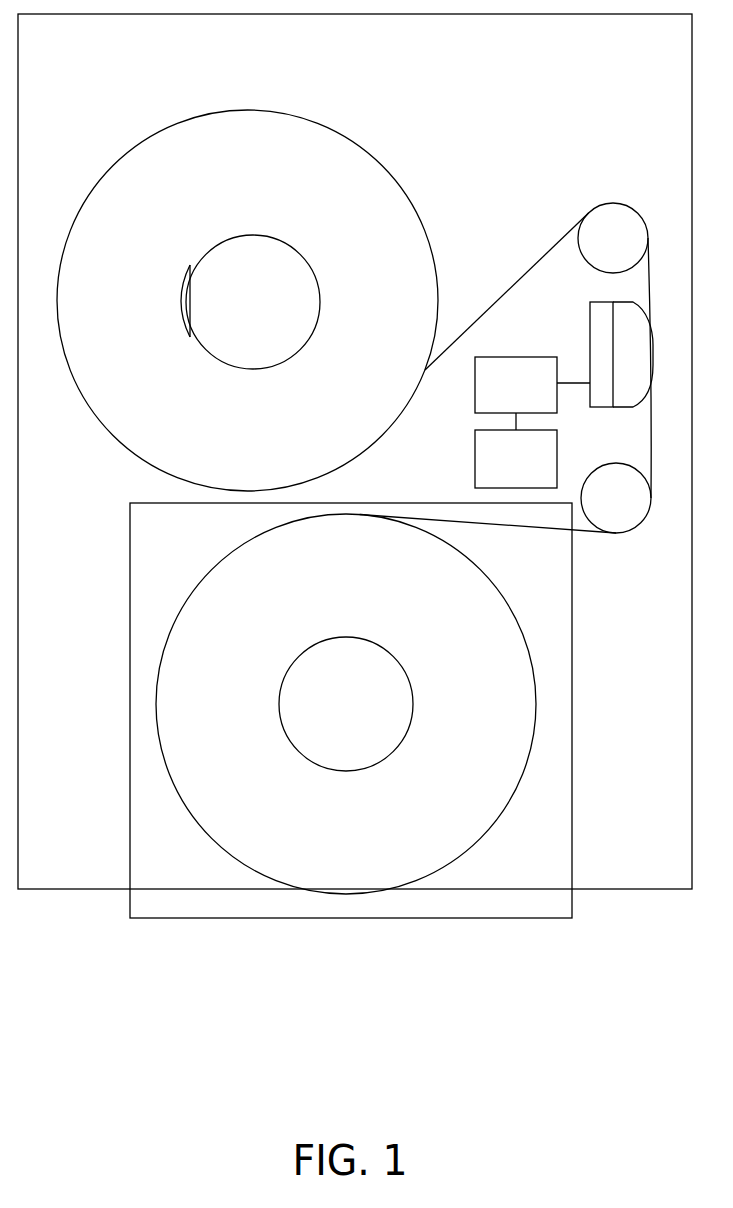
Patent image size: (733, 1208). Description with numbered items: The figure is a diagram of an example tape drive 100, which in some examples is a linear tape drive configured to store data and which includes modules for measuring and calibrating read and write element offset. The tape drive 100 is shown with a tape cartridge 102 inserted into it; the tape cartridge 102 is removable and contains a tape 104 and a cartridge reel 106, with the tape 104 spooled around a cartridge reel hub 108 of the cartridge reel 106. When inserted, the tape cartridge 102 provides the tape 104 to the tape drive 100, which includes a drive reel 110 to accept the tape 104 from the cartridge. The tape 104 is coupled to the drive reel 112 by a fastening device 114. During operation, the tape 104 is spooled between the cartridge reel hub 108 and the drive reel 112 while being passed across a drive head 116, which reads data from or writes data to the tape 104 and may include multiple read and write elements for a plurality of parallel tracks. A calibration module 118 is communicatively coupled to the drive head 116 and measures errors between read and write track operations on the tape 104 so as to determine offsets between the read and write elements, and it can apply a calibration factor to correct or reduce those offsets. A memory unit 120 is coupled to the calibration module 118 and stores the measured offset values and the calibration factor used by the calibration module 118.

The tape drive 100 is at (365, 1121).
The tape cartridge 102 is at (572, 765).
The tape 104 is at (530, 270).
The cartridge reel 106 is at (488, 576).
The cartridge reel hub 108 is at (412, 690).
The drive reel 110 is at (355, 142).
The drive reel 112 is at (293, 247).
The fastening device 114 is at (185, 278).
The drive head 116 is at (590, 330).
The calibration module 118 is at (540, 398).
The memory unit 120 is at (540, 472).